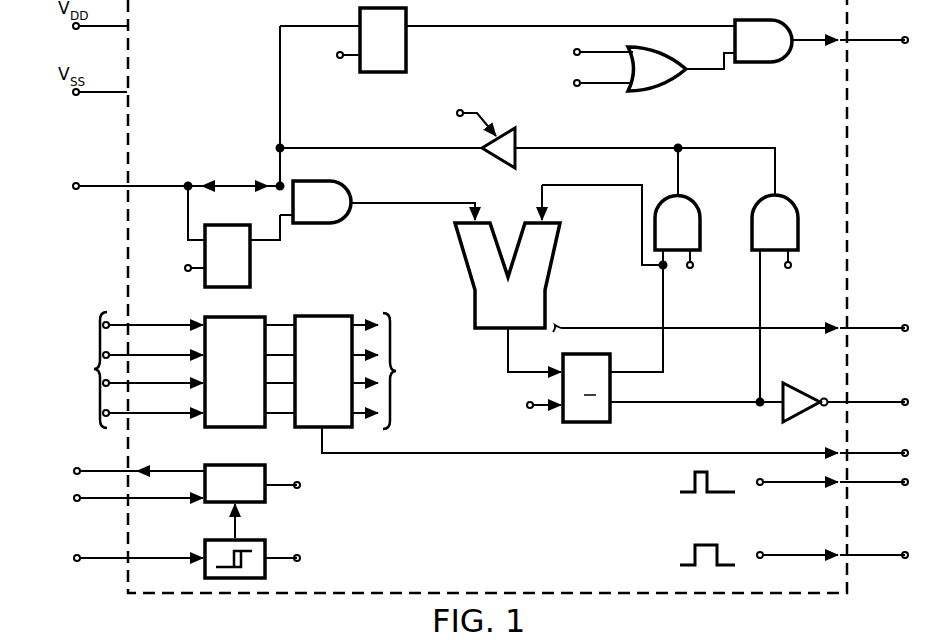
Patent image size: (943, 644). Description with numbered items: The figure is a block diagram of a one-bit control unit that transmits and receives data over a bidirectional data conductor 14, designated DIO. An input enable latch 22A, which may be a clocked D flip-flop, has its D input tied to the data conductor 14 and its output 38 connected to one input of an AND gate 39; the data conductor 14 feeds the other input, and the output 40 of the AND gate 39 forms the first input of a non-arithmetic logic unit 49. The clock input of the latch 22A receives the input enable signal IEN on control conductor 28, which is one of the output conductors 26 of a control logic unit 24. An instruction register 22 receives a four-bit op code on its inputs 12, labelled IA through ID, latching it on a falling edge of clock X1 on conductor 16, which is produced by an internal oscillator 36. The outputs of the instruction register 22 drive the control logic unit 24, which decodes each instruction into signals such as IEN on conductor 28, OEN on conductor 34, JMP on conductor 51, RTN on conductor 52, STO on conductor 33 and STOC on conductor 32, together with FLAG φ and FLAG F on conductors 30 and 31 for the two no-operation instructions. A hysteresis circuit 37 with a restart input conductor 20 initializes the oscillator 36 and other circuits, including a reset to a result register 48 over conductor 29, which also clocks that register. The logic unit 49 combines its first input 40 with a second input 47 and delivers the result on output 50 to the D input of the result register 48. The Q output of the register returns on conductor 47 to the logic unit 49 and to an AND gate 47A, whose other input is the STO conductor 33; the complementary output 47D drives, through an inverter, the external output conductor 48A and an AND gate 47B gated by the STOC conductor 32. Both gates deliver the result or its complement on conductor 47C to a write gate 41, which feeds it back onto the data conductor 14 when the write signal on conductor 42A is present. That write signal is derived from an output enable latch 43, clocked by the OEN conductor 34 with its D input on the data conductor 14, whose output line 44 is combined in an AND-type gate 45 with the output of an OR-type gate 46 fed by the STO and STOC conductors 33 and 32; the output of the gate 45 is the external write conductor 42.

The instruction register inputs 12 is at (97, 303).
The bidirectional data conductor 14 is at (78, 189).
The clock conductor 16 is at (80, 468).
The restart input conductor 20 is at (80, 555).
The instruction register 22 is at (232, 317).
The input enable latch 22A is at (205, 228).
The control logic unit 24 is at (322, 316).
The output conductors of control logic unit 26 is at (389, 371).
The IEN control conductor 28 is at (171, 281).
The result register clock and reset conductor 29 is at (530, 408).
The FLAG φ conductor 30 is at (612, 326).
The FLAG F conductor 31 is at (415, 455).
The STOC conductor 32 is at (791, 266).
The STO conductor 33 is at (693, 266).
The OEN conductor 34 is at (324, 70).
The internal oscillator 36 is at (230, 465).
The hysteresis circuit 37 is at (250, 540).
The input enable latch output 38 is at (282, 240).
The AND gate 39 is at (345, 182).
The AND gate output 40 is at (418, 203).
The write gate 41 is at (515, 133).
The write conductor 42 is at (905, 43).
The write signal conductor 42A is at (478, 110).
The output enable latch 43 is at (406, 14).
The output enable line 44 is at (517, 26).
The write AND gate 45 is at (770, 18).
The write OR gate 46 is at (681, 74).
The second input of logic unit 47 is at (605, 185).
The AND gate 47A is at (696, 208).
The AND gate 47B is at (795, 208).
The write gate input conductor 47C is at (612, 148).
The complementary output of result register 47D is at (768, 354).
The result register 48 is at (582, 423).
The external result output conductor 48A is at (903, 400).
The non-arithmetic logic unit 49 is at (457, 258).
The logic unit output 50 is at (506, 368).
The JMP conductor 51 is at (808, 480).
The RTN conductor 52 is at (814, 553).